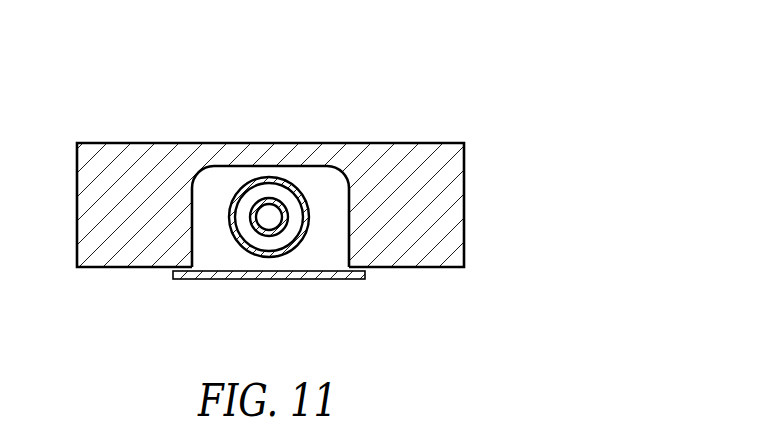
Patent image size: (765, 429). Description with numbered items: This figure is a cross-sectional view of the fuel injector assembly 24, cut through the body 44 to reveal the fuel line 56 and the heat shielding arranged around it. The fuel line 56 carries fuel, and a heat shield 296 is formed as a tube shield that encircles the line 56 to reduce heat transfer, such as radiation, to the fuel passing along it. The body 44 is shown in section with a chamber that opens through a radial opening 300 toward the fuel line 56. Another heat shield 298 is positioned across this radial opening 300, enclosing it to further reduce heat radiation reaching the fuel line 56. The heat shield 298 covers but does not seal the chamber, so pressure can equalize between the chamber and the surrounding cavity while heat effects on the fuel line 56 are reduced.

The fluid handling assembly 24 is at (478, 112).
The housing block 44 is at (450, 167).
The fuel line 56 is at (268, 198).
The heat shield 296 is at (297, 189).
The heat shield 298 is at (348, 280).
The radial opening 300 is at (330, 250).